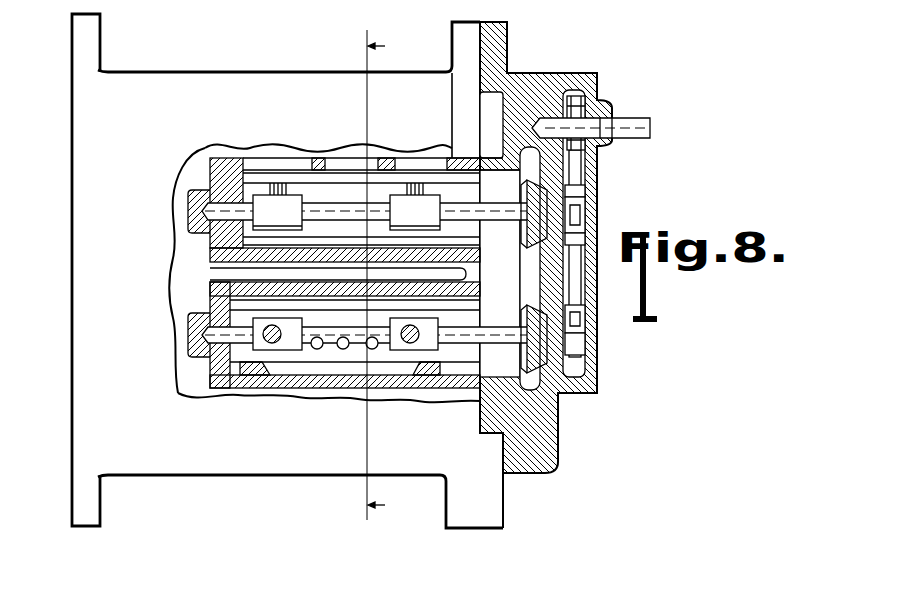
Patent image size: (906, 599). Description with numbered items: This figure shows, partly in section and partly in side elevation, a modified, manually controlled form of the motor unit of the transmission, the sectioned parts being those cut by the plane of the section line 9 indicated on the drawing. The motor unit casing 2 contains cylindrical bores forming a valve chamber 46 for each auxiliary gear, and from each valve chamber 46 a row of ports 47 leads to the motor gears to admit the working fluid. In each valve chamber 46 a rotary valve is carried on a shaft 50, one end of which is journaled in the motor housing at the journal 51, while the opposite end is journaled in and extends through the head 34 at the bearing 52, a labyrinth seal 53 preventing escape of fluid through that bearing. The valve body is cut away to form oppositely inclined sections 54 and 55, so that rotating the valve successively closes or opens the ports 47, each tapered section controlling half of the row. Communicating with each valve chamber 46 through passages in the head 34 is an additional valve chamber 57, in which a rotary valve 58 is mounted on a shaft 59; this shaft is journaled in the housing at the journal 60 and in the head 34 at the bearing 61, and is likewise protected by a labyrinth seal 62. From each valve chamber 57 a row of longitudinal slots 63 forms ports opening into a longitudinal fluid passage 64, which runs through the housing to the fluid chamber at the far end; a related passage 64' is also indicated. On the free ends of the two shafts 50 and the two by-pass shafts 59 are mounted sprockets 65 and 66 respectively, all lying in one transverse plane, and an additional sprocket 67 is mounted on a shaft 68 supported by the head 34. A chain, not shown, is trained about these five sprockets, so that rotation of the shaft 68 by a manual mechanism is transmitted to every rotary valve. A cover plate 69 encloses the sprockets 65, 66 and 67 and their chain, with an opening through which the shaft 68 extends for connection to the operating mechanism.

The motor unit casing 2 is at (270, 52).
The section line 9- 9 is at (385, 279).
The head 34 is at (548, 434).
The valve chamber 46 is at (236, 364).
The ports 47 is at (352, 352).
The shaft 50 is at (491, 342).
The shaft journal 51 is at (215, 325).
The shaft bearing 52 is at (567, 331).
The labyrinth seal 53 is at (526, 322).
The inclined section 54 is at (256, 378).
The inclined section 55 is at (425, 378).
The additional valve chamber 57 is at (215, 250).
The rotary valve 58 is at (247, 160).
The shaft 59 is at (501, 220).
The shaft journal 60 is at (211, 197).
The shaft bearing 61 is at (577, 193).
The labyrinth seal 62 is at (562, 240).
The longitudinal slots 63 is at (353, 116).
The longitudinal fluid passage 64 is at (404, 143).
The pipe 64' is at (363, 280).
The sprocket 65 is at (581, 350).
The sprocket 66 is at (573, 212).
The additional sprocket 67 is at (599, 97).
The shaft 68 is at (626, 127).
The cover plate 69 is at (590, 298).